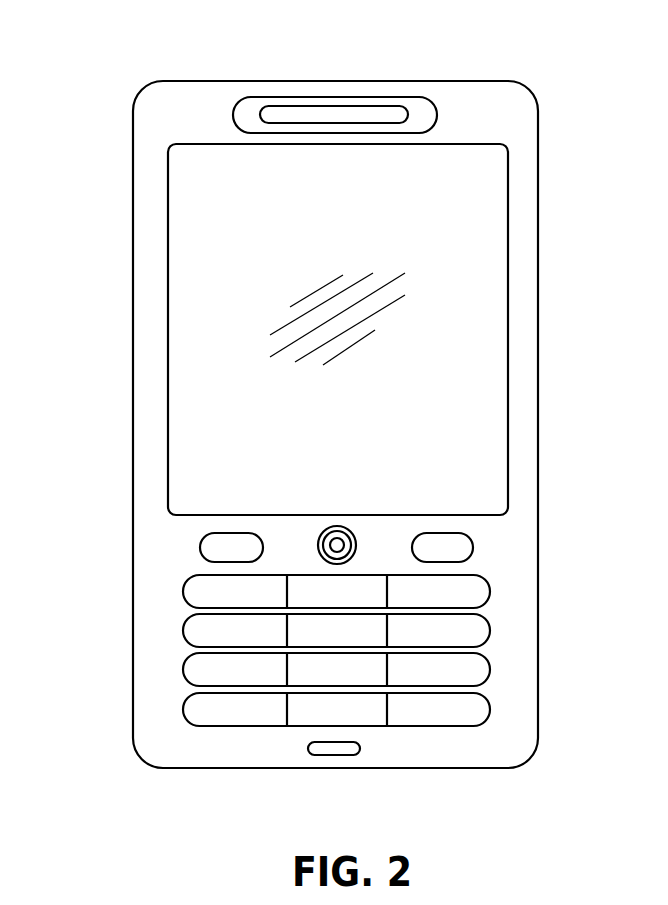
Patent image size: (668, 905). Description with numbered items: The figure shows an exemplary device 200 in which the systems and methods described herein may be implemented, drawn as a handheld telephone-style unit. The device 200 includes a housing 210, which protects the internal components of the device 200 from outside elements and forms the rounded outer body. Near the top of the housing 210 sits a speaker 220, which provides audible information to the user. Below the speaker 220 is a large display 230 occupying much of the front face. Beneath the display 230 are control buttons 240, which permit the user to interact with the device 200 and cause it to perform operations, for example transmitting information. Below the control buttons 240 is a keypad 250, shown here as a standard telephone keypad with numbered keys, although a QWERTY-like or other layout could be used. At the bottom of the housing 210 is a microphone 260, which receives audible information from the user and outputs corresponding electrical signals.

The device 200 is at (345, 418).
The housing 210 is at (133, 195).
The speaker 220 is at (437, 113).
The display 230 is at (480, 270).
The control buttons 240 is at (488, 530).
The keypad 250 is at (503, 713).
The microphone 260 is at (333, 752).